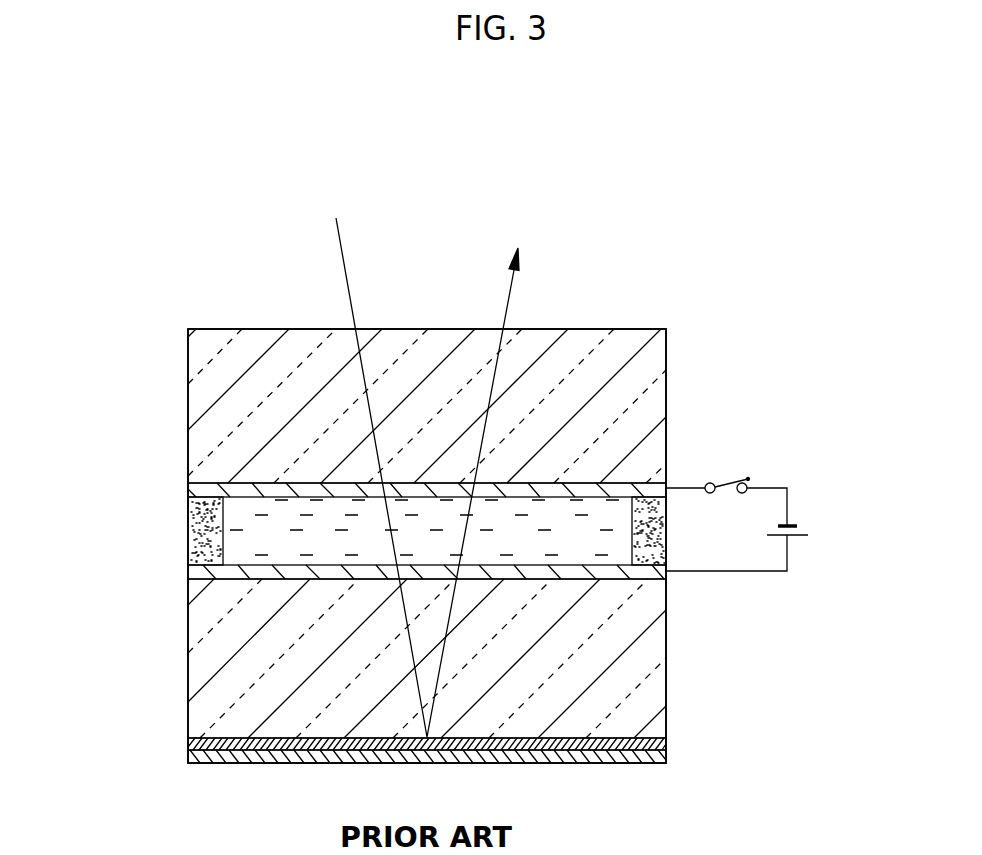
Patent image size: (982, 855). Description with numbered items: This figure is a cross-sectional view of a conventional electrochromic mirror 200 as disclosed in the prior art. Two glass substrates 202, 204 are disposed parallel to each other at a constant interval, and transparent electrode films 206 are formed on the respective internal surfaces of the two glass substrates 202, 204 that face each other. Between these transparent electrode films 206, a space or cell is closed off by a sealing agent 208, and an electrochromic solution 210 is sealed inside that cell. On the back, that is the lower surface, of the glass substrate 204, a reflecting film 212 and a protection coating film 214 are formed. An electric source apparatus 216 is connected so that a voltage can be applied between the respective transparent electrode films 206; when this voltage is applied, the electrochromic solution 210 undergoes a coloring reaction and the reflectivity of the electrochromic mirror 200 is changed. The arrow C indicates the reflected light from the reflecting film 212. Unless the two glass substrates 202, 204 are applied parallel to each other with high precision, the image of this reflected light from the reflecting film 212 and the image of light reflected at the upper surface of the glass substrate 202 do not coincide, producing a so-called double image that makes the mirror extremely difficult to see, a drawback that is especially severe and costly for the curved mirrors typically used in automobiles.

The electrochromic mirror 200 is at (577, 233).
The glass substrate 202 is at (188, 358).
The glass substrate 204 is at (188, 614).
The transparent electrode film 206 is at (188, 489).
The sealing agent 208 is at (196, 508).
The electrochromic solution 210 is at (235, 529).
The reflecting film 212 is at (188, 742).
The protection coating film 214 is at (188, 757).
The electric source apparatus 216 is at (770, 465).
The arrow indicating reflected light C is at (346, 278).